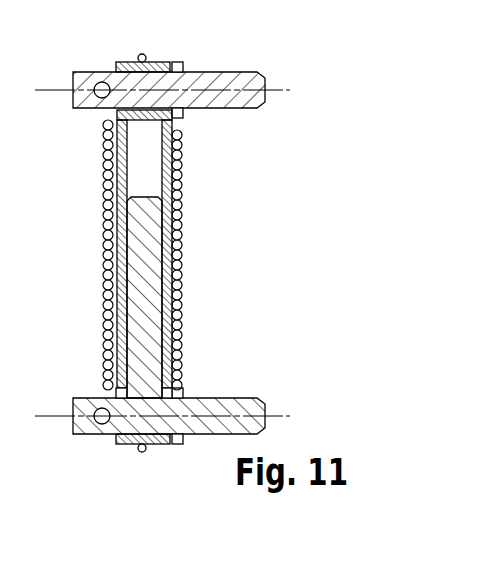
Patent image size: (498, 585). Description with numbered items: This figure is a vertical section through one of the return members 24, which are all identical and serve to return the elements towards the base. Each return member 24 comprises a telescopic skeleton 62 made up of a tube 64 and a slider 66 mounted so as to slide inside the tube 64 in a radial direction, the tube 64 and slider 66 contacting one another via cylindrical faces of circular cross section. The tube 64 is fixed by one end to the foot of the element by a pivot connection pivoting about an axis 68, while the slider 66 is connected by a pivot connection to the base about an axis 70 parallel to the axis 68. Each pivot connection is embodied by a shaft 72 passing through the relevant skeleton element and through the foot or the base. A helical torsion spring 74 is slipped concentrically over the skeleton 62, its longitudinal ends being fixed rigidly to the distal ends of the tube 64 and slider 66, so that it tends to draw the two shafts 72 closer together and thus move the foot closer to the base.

The return member 24 is at (281, 144).
The telescopic skeleton 62 is at (152, 256).
The tube 64 is at (167, 152).
The slider 66 is at (141, 288).
The axis 68 is at (278, 90).
The axis 70 is at (279, 417).
The shaft 72 is at (220, 82).
The helical torsion spring 74 is at (178, 190).